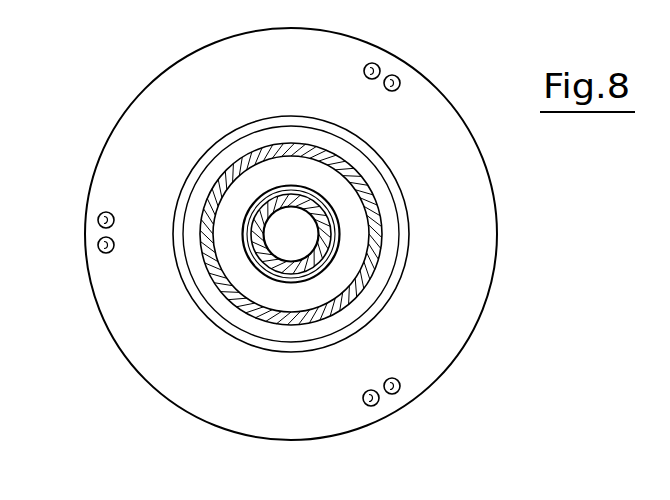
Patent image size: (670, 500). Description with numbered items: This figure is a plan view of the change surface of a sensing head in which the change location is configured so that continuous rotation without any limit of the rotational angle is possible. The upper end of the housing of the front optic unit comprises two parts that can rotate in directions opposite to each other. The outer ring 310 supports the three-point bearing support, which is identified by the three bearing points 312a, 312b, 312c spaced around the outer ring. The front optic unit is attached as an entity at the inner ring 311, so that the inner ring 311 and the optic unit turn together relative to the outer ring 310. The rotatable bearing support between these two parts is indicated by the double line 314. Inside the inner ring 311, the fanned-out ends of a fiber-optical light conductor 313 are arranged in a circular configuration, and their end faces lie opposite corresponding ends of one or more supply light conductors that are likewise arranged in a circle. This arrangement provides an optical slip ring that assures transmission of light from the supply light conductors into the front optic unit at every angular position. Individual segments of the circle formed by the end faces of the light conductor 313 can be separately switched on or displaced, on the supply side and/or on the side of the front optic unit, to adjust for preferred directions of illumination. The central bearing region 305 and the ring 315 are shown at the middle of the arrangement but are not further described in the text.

The shaft bearing 305 is at (247, 249).
The outer ring 310 is at (447, 315).
The inner ring 311 is at (257, 292).
The three-point bearing support 312a is at (97, 236).
The three-point bearing support 312b is at (381, 69).
The three-point bearing support 312c is at (385, 402).
The fiber-optical light conductor 313 is at (376, 262).
The double line 314 is at (268, 345).
The bearing ring 315 is at (260, 203).